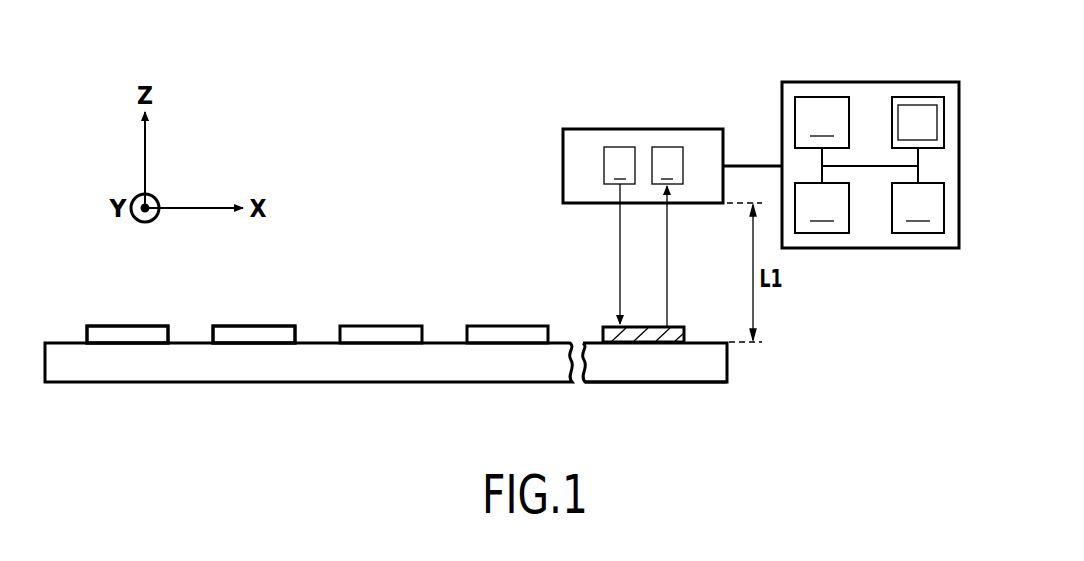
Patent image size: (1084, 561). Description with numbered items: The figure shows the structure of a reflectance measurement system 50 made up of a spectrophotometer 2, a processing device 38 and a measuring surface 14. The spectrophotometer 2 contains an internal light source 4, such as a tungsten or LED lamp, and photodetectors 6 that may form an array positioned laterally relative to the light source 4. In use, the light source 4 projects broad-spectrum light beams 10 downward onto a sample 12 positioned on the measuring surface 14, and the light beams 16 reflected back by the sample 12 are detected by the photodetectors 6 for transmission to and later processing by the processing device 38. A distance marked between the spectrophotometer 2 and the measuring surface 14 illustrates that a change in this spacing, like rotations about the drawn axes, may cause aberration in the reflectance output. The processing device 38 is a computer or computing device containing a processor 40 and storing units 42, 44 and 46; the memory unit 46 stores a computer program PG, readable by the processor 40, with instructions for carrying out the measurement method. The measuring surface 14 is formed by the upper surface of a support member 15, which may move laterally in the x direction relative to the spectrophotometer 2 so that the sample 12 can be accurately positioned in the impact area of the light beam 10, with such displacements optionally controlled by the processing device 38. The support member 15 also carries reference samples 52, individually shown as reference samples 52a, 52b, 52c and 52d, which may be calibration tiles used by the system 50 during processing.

The spectrophotometer 2 is at (633, 128).
The internal light source 4 is at (619, 165).
The photodetectors 6 is at (667, 165).
The light beams 10 is at (618, 252).
The sample 12 is at (607, 331).
The measuring surface 14 is at (710, 341).
The support member 15 is at (672, 386).
The reflected light beams 16 is at (670, 250).
The processing device 38 is at (867, 79).
The processor 40 is at (822, 122).
The storing unit 42 is at (822, 208).
The storing unit 44 is at (918, 208).
The memory unit 46 is at (922, 96).
The system 50 is at (399, 206).
The reference samples 52 is at (138, 349).
The reference sample 52a is at (132, 330).
The reference sample 52b is at (260, 330).
The reference sample 52c is at (385, 330).
The reference sample 52d is at (522, 333).